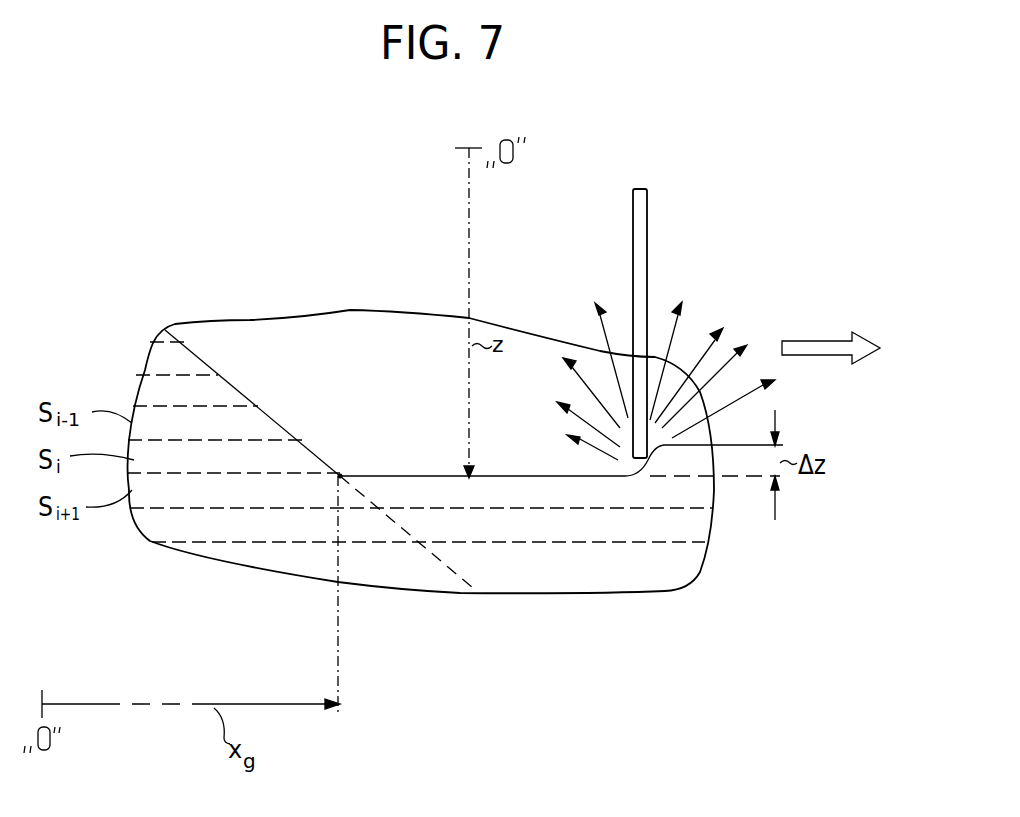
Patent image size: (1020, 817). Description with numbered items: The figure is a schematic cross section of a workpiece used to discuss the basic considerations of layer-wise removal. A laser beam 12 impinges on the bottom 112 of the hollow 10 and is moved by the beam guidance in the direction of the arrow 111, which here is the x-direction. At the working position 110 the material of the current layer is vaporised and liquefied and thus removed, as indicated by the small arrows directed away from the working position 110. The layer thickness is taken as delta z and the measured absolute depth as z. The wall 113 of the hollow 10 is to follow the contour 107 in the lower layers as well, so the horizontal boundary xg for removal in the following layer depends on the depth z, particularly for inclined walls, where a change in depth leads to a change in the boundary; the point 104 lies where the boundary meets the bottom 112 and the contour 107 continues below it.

The hollow 10 is at (310, 342).
The laser beam 12 is at (640, 204).
The working point 104 is at (340, 476).
The contour 107 is at (452, 574).
The working position 110 is at (665, 458).
The arrow 111 is at (814, 340).
The bottom 112 is at (398, 475).
The wall 113 is at (222, 375).